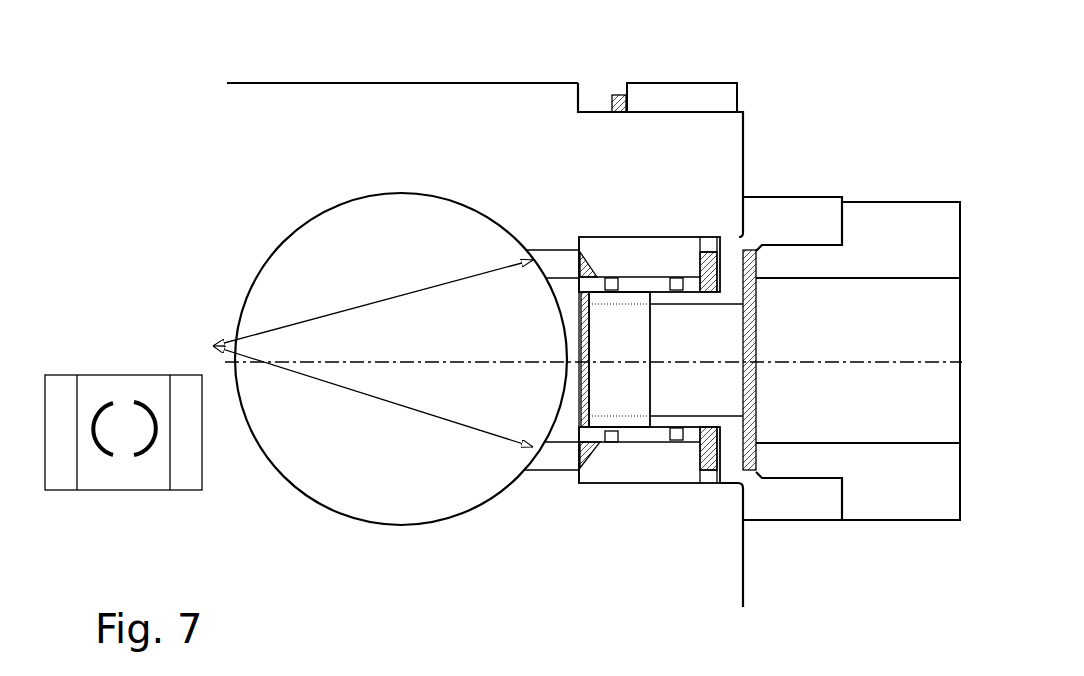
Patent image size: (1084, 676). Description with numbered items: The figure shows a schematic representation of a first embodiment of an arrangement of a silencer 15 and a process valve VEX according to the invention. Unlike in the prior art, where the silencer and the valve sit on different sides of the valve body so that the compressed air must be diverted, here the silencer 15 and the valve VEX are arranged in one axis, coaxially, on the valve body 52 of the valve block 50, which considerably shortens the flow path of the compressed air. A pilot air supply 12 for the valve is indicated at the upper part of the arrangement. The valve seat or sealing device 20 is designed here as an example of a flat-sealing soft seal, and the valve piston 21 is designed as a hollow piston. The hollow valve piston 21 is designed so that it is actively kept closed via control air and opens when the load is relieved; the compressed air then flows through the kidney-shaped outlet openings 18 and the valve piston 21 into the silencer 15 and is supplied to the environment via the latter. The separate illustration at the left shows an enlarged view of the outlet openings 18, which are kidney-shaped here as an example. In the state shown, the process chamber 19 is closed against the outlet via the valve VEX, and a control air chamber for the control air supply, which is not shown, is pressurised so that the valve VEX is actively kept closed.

The pilot air supply 12 is at (711, 246).
The silencer 15 is at (901, 217).
The outlet openings 18 is at (110, 402).
The process chamber 19 is at (357, 510).
The valve seat 20 is at (563, 278).
The valve piston 21 is at (622, 413).
The valve block 50 is at (192, 145).
The valve body 52 is at (470, 103).
The process valve VEX is at (708, 395).